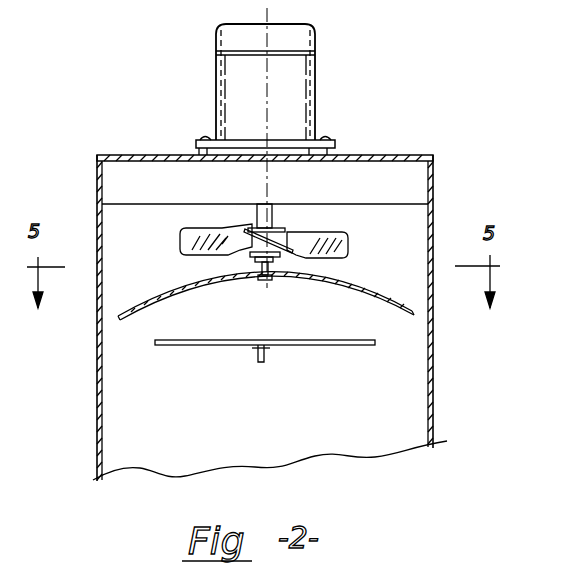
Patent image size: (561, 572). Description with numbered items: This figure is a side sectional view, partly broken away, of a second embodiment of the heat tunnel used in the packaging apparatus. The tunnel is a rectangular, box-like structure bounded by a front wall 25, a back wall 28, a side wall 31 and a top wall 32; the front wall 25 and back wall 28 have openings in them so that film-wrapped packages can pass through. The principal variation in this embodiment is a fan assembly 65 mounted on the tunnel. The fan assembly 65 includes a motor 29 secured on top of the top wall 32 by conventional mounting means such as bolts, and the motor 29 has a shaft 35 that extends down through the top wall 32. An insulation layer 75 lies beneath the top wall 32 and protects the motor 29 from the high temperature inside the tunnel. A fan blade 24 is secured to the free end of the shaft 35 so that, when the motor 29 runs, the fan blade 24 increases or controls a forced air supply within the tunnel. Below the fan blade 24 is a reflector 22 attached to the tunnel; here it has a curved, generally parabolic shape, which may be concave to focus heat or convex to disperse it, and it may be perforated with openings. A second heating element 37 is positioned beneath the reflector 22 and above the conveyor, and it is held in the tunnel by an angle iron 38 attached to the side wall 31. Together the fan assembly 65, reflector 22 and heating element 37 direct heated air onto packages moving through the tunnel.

The fan assembly 65 is at (299, 89).
The motor 29 is at (320, 96).
The insulation layer 75 is at (352, 182).
The top wall 32 is at (410, 153).
The front wall 25 is at (272, 302).
The back wall 28 is at (95, 183).
The side wall 31 is at (405, 418).
The shaft 35 is at (275, 213).
The fan blade 24 is at (347, 243).
The reflector 22 is at (218, 288).
The second heating element 37 is at (190, 348).
The angle iron 38 is at (258, 364).